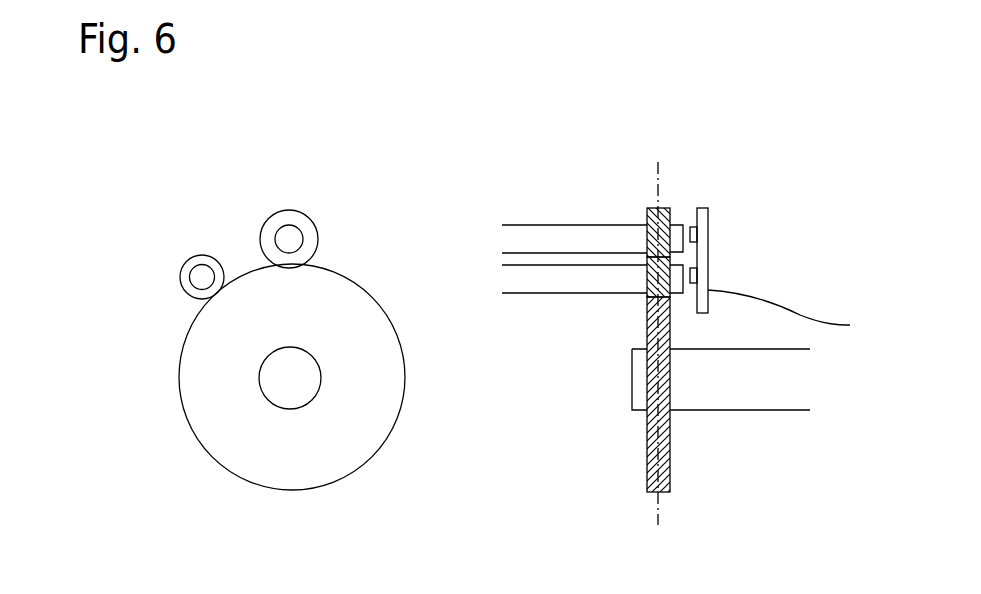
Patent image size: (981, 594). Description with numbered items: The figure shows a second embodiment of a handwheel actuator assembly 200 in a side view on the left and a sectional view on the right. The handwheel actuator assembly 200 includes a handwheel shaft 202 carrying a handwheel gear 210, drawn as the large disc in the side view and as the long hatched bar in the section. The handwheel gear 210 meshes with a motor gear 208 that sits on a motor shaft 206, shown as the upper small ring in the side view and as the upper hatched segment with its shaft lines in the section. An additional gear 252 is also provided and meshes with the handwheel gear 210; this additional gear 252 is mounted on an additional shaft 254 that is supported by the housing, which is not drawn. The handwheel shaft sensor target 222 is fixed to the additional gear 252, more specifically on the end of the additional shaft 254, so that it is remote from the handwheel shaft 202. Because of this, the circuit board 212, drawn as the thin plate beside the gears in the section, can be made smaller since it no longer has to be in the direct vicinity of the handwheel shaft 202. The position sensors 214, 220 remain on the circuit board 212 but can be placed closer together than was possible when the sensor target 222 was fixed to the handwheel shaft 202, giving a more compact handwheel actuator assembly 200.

The handwheel actuator assembly 200 is at (132, 150).
The handwheel shaft 202 is at (290, 410).
The motor shaft 206 is at (298, 226).
The motor gear 208 is at (291, 210).
The handwheel gear 210 is at (305, 491).
The circuit board 212 is at (710, 257).
The position sensor 214 is at (698, 232).
The position sensor 220 is at (698, 273).
The handwheel shaft sensor target 222 is at (809, 319).
The additional gear 252 is at (182, 284).
The additional shaft 254 is at (181, 275).